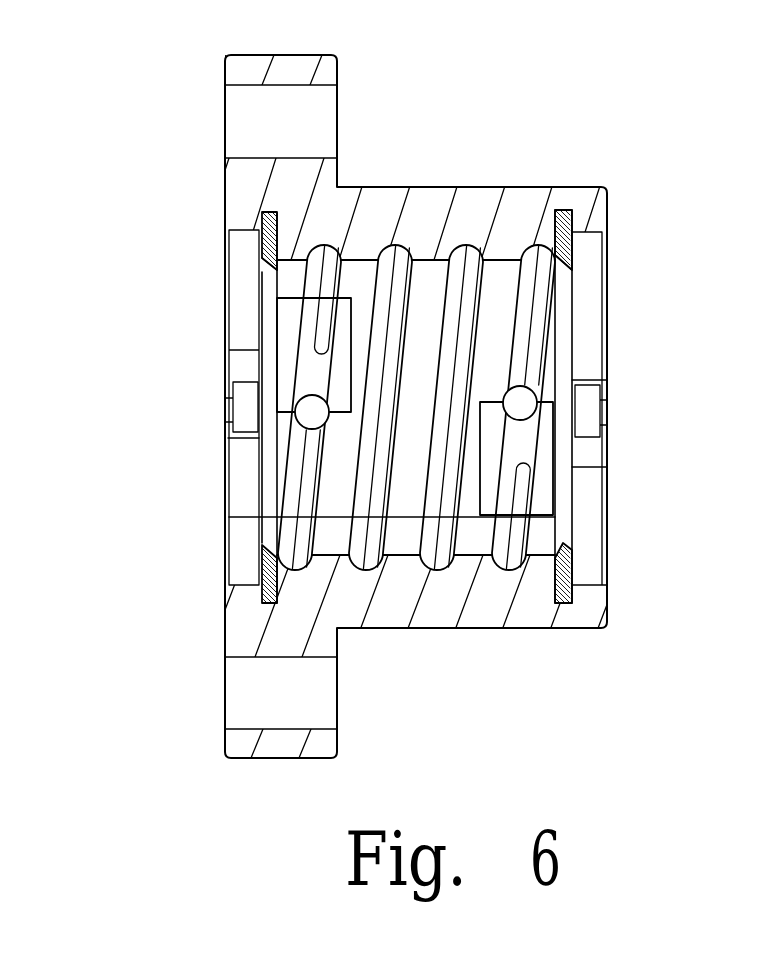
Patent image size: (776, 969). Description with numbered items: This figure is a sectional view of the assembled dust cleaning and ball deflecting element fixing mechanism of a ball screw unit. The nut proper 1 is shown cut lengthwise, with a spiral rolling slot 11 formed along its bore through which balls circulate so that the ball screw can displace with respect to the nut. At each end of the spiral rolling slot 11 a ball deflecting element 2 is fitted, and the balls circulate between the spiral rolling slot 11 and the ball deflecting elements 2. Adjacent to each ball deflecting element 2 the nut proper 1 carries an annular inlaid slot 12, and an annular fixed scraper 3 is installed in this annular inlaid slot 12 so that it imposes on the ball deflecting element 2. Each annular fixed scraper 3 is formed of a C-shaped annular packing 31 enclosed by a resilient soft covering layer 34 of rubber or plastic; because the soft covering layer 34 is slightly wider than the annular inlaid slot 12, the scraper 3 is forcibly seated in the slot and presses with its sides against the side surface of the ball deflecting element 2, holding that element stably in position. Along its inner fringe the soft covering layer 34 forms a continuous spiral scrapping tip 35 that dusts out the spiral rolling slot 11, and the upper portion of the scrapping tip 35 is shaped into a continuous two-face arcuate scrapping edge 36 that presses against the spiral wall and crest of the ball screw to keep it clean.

The nut proper 1 is at (512, 238).
The spiral rolling slot 11 is at (402, 257).
The annular inlaid slot 12 is at (318, 297).
The ball deflecting element 2 is at (288, 388).
The annular fixed scraper 3 is at (265, 213).
The annular packing 31 is at (260, 223).
The soft covering layer 34 is at (257, 247).
The scrapping tip 35 is at (265, 272).
The two-face arcuate scrapping edge 36 is at (260, 256).